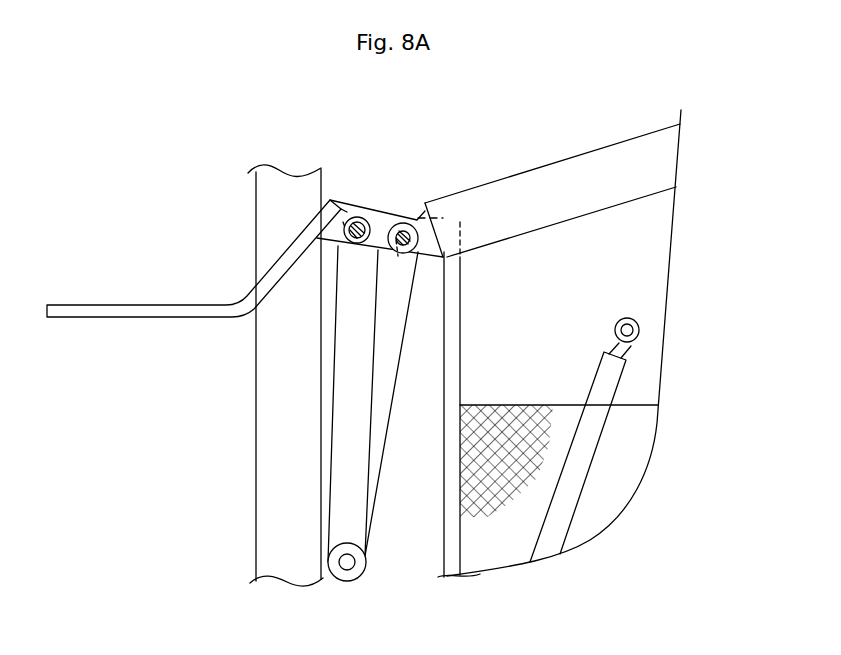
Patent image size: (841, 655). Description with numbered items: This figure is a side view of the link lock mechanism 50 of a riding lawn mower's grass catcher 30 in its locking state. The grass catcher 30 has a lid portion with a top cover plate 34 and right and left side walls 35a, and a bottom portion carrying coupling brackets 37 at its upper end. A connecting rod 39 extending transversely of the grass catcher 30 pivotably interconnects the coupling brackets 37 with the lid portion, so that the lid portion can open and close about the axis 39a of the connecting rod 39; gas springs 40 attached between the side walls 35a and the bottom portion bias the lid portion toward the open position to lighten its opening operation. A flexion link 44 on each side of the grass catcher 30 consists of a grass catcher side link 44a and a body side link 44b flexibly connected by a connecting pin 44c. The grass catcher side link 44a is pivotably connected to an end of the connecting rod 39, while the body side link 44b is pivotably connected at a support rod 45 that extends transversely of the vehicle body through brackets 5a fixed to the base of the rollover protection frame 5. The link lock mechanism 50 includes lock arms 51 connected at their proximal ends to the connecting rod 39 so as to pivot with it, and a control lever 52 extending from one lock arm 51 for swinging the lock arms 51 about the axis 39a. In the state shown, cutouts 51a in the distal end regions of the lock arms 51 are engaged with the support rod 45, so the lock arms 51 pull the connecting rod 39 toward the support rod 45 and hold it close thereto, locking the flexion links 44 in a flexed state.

The rollover protection frame 5 is at (257, 402).
The brackets 5a is at (349, 210).
The grass catcher 30 is at (621, 139).
The top cover plate 34 is at (549, 166).
The side walls 35a is at (655, 263).
The coupling brackets 37 is at (430, 257).
The connecting rod 39 is at (398, 255).
The axis 39a is at (443, 218).
The gas springs 40 is at (592, 384).
The flexion links 44 is at (350, 448).
The grass catcher side link 44a is at (333, 398).
The body side link 44b is at (395, 408).
The connecting pin 44c is at (347, 566).
The support rod 45 is at (358, 213).
The link lock mechanism 50 is at (391, 188).
The lock arms 51 is at (385, 206).
The cutouts 51a is at (412, 222).
The control lever 52 is at (120, 305).